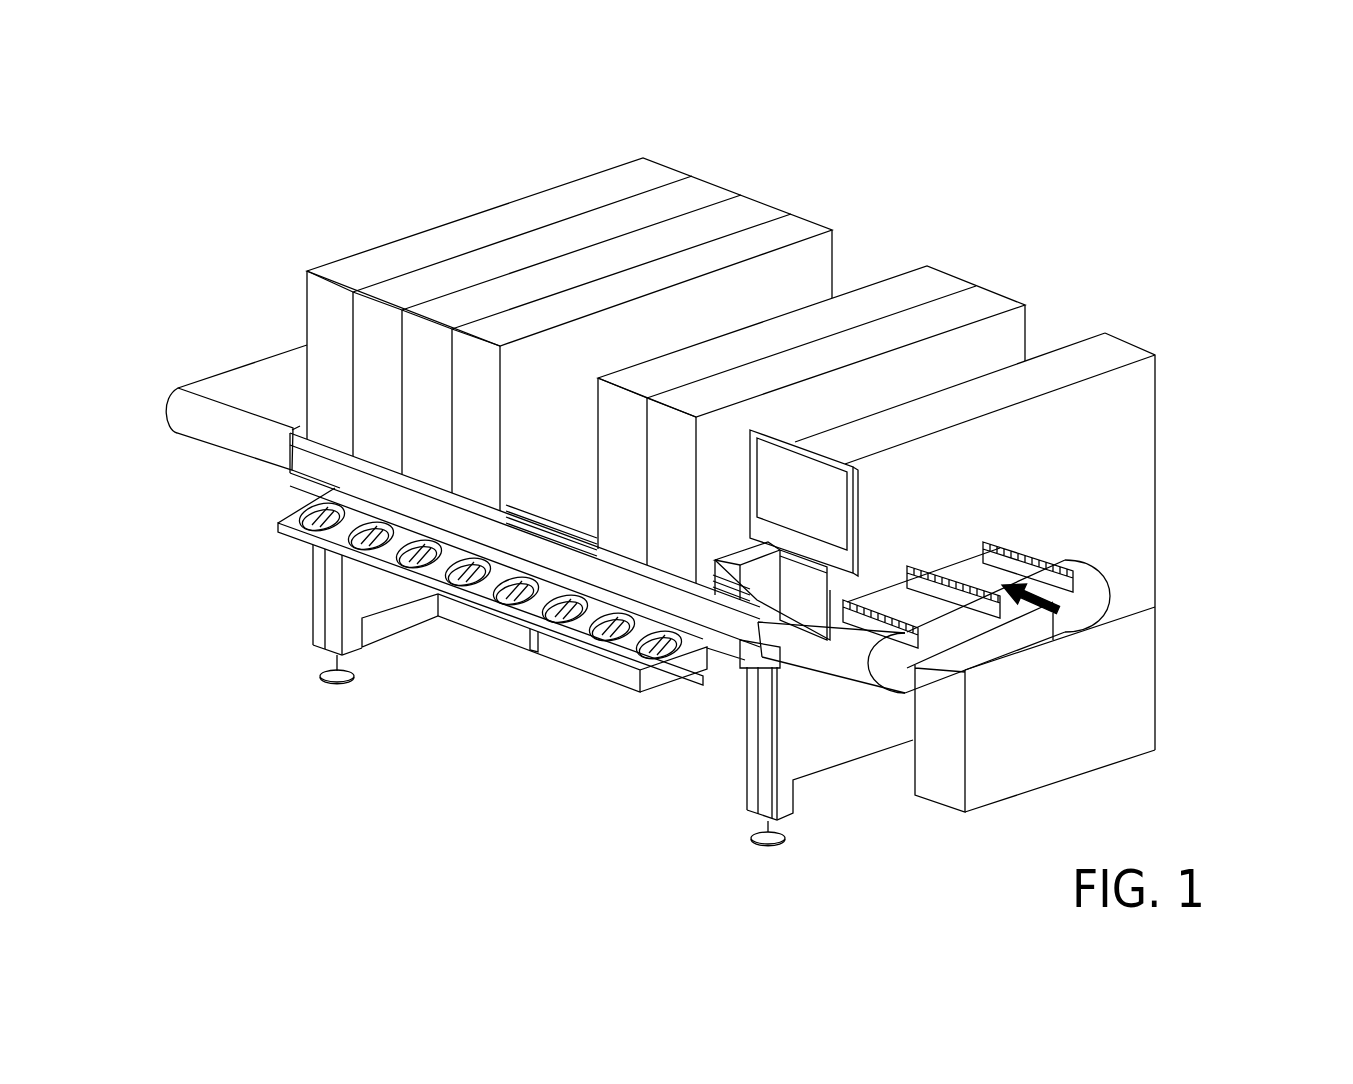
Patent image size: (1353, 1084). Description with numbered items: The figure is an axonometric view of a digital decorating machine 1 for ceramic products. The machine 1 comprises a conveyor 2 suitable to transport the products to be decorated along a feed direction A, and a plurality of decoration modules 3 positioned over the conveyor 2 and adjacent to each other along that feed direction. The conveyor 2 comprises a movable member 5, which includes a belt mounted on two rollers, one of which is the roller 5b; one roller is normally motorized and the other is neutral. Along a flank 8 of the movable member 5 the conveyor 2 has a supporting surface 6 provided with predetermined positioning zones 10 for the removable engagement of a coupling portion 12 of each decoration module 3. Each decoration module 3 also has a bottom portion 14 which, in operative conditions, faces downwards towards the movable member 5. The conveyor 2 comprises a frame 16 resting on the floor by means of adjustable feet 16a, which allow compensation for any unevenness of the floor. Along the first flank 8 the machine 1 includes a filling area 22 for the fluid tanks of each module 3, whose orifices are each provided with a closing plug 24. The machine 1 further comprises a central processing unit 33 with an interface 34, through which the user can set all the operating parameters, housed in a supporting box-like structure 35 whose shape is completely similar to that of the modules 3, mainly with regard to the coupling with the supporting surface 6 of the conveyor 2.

The digital decorating machine 1 is at (1133, 197).
The conveyor 2 is at (279, 646).
The decoration modules 3 is at (669, 195).
The movable member 5 is at (231, 381).
The roller 5b is at (940, 647).
The first supporting surface 6 is at (299, 432).
The first flank 8 is at (617, 575).
The positioning zones 10 is at (563, 520).
The first coupling portion 12 is at (702, 577).
The bottom portion 14 is at (730, 544).
The frame 16 is at (813, 738).
The adjustable feet 16a is at (757, 842).
The filling area 22 is at (537, 629).
The closing plug 24 is at (447, 558).
The central processing unit 33 is at (1139, 337).
The interface 34 is at (808, 478).
The supporting box-like structure 35 is at (1105, 412).
The feed direction A is at (1075, 605).